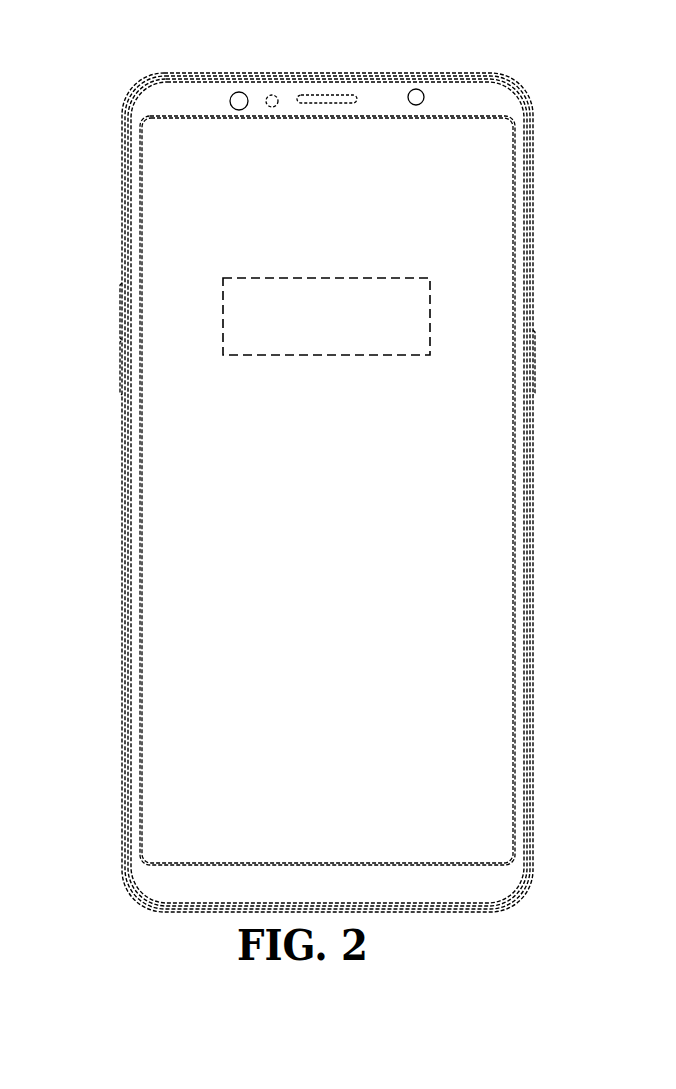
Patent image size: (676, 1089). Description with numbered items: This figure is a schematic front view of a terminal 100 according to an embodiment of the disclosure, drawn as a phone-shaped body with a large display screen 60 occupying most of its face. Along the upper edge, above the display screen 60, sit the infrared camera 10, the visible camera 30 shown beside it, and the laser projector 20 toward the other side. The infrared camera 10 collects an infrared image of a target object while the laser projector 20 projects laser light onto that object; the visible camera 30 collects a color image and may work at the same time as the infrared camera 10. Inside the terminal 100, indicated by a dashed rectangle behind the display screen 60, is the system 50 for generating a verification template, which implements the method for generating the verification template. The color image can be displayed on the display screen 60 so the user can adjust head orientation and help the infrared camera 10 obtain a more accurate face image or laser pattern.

The terminal 100 is at (73, 53).
The infrared camera 10 is at (238, 92).
The laser projector 20 is at (408, 92).
The visible camera 30 is at (272, 95).
The system for generating a verification template 50 is at (430, 315).
The display screen 60 is at (497, 652).